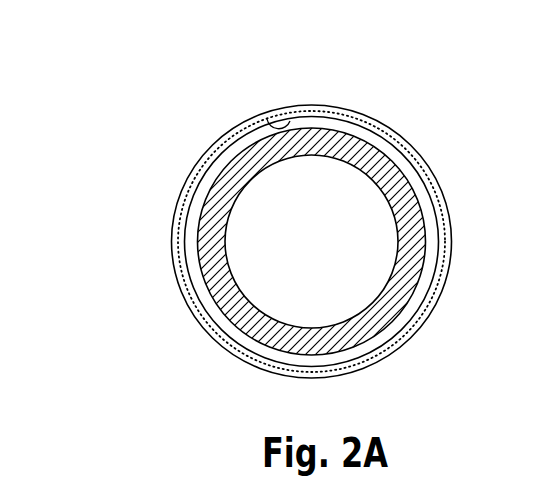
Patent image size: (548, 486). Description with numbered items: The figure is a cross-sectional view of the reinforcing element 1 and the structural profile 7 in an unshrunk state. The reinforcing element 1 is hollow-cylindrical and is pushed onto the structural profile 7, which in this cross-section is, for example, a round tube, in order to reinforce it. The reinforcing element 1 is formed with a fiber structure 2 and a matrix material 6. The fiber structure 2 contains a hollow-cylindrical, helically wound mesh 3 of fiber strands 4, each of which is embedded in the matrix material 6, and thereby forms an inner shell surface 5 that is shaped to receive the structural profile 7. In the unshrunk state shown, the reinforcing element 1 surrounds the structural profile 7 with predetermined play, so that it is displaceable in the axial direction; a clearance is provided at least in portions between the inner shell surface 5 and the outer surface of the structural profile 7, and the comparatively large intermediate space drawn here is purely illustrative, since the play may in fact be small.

The reinforcing element 1 is at (155, 115).
The fiber structure 2 is at (183, 187).
The mesh 3 is at (375, 120).
The fiber strands 4 is at (233, 130).
The inner shell surface 5 is at (288, 127).
The matrix material 6 is at (217, 147).
The structural profile 7 is at (380, 164).